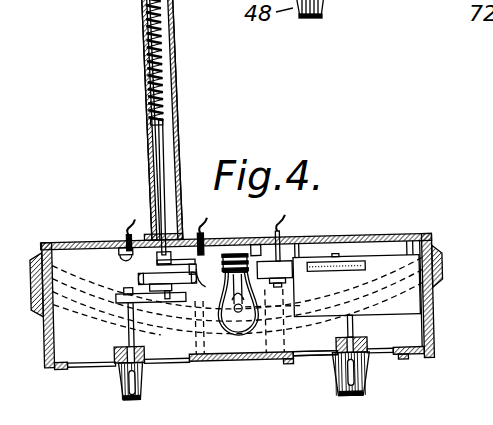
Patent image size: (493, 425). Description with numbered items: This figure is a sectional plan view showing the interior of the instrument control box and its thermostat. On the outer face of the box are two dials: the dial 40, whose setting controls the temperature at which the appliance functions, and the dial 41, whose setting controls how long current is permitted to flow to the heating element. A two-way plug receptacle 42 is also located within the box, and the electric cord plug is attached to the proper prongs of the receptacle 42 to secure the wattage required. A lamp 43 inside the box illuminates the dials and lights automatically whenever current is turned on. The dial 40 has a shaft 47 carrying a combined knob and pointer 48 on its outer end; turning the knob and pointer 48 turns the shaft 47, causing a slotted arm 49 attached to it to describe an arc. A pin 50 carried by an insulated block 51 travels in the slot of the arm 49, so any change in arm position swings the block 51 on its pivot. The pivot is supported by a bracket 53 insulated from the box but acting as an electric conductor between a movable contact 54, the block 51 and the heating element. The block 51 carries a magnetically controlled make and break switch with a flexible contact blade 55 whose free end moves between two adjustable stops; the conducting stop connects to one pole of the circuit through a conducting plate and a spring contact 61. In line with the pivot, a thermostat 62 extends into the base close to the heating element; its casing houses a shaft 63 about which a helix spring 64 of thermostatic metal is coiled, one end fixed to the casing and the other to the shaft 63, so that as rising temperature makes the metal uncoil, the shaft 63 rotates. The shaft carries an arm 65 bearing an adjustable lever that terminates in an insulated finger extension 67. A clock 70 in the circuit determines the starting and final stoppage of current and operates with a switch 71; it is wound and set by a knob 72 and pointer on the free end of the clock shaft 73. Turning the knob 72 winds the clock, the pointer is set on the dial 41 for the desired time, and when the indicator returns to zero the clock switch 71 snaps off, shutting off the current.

The dial 40 is at (93, 364).
The dial 41 is at (318, 357).
The receptacle 42 is at (229, 361).
The lamp 43 is at (252, 340).
The shaft 47 is at (128, 335).
The combined knob and pointer 48 is at (141, 385).
The slotted arm 49 is at (133, 319).
The pin 50 is at (163, 297).
The insulated block 51 is at (140, 278).
The bracket 53 is at (130, 262).
The movable contact 54 is at (146, 238).
The flexible contact blade 55 is at (125, 289).
The spring contact 61 is at (186, 240).
The thermostat 62 is at (148, 118).
The shaft 63 is at (163, 163).
The helix spring 64 is at (152, 66).
The arm 65 is at (206, 244).
The finger extension 67 is at (205, 286).
The clock 70 is at (395, 292).
The switch 71 is at (286, 238).
The knob 72 is at (368, 378).
The clock shaft 73 is at (352, 338).